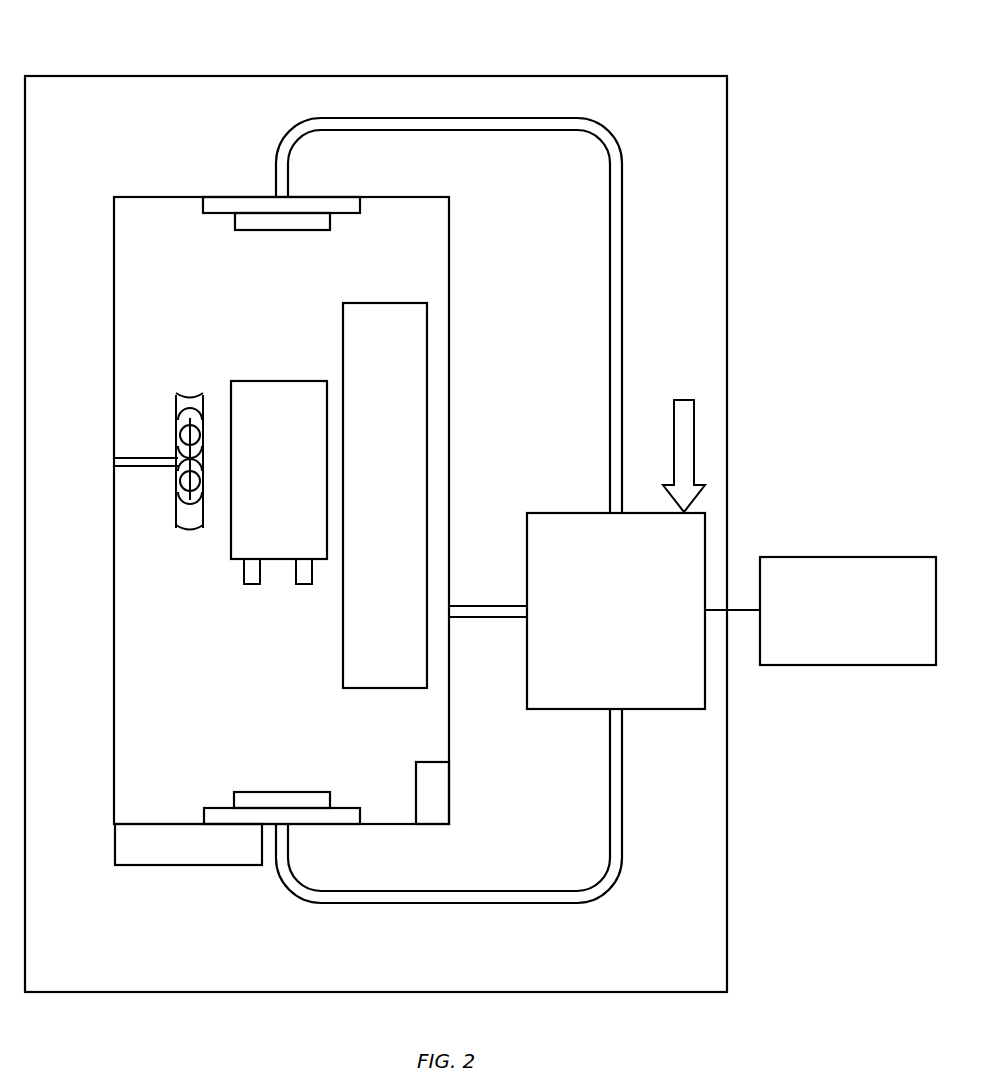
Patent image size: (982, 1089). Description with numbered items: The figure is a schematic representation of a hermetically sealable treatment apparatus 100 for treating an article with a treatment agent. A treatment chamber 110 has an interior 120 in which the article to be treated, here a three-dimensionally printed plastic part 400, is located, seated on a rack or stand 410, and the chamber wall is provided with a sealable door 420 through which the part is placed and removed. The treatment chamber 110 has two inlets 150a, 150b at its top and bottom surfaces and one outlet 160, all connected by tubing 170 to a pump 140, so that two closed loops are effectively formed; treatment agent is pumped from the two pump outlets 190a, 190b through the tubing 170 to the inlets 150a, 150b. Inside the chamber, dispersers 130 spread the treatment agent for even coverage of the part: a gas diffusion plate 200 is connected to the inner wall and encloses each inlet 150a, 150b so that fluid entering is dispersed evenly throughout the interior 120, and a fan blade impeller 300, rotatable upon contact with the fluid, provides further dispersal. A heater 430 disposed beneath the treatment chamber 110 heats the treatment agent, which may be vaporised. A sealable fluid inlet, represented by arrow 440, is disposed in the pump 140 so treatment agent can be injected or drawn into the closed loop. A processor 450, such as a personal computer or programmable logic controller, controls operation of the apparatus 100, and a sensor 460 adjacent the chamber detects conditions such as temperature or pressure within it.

The treatment apparatus 100 is at (697, 76).
The treatment chamber 110 is at (114, 212).
The interior 120 is at (176, 668).
The disperser 130 is at (285, 232).
The pump 140 is at (616, 611).
The first inlet 150a is at (288, 195).
The second inlet 150b is at (275, 828).
The outlet 160 is at (452, 604).
The tubing 170 is at (615, 271).
The first pump outlet 190a is at (607, 512).
The second pump outlet 190b is at (607, 710).
The gas diffusion plate 200 is at (218, 200).
The fan blade impeller 300 is at (118, 462).
The 3D-printed plastic part 400 is at (279, 470).
The rack or stand 410 is at (253, 585).
The sealable door 420 is at (385, 495).
The heater 430 is at (145, 868).
The sealable inlet 440 is at (694, 414).
The processor 450 is at (820, 611).
The sensor 460 is at (449, 791).